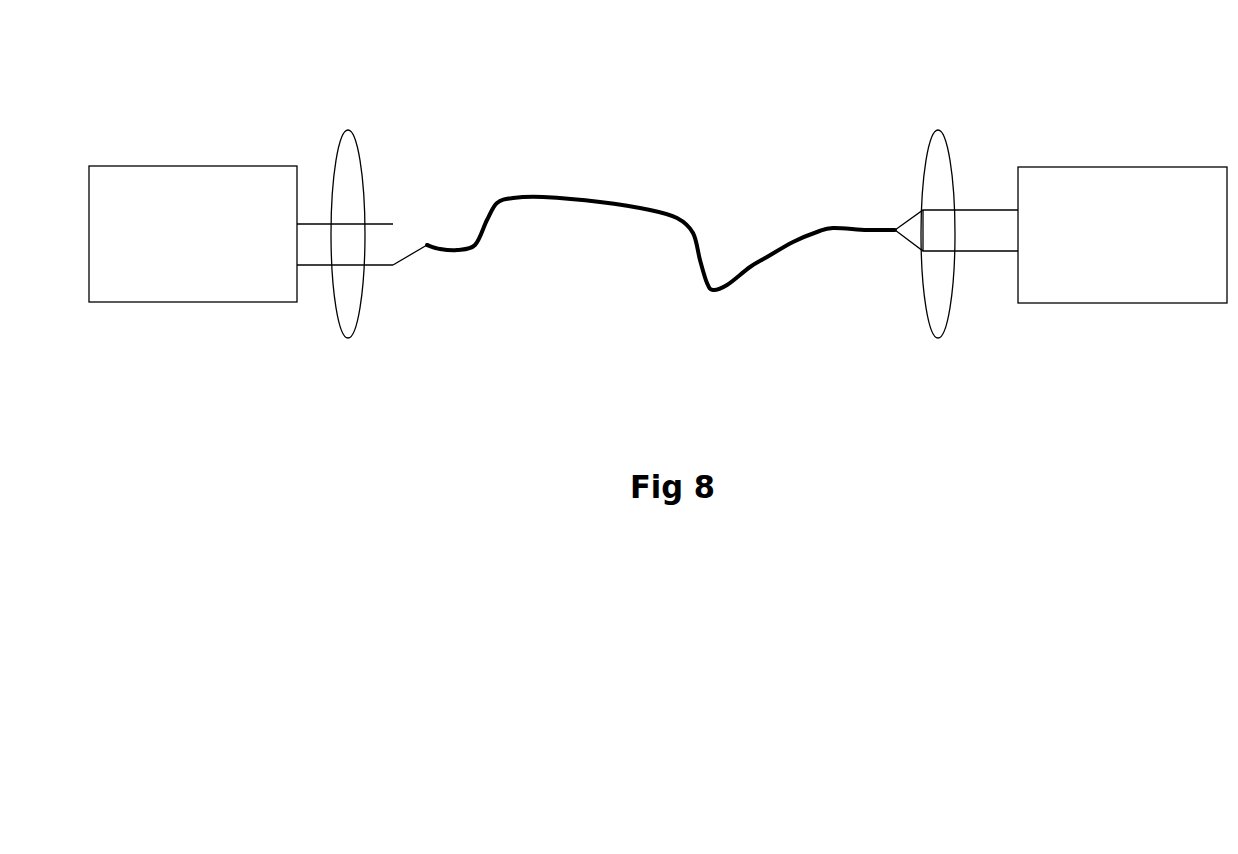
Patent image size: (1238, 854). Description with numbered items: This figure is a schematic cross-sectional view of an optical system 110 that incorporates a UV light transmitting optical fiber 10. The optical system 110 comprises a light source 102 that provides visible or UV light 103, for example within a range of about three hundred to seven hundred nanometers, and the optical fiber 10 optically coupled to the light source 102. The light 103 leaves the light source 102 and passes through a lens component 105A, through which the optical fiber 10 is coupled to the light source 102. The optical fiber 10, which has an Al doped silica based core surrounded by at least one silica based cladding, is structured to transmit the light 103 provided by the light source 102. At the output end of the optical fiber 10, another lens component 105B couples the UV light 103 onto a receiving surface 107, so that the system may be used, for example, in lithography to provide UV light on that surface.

The optical system 110 is at (165, 50).
The light source 102 is at (220, 280).
The light 103 is at (394, 229).
The lens component 105A is at (359, 309).
The lens component 105B is at (938, 299).
The UV light transmitting optical fiber 10 is at (770, 260).
The receiving surface 107 is at (1041, 298).